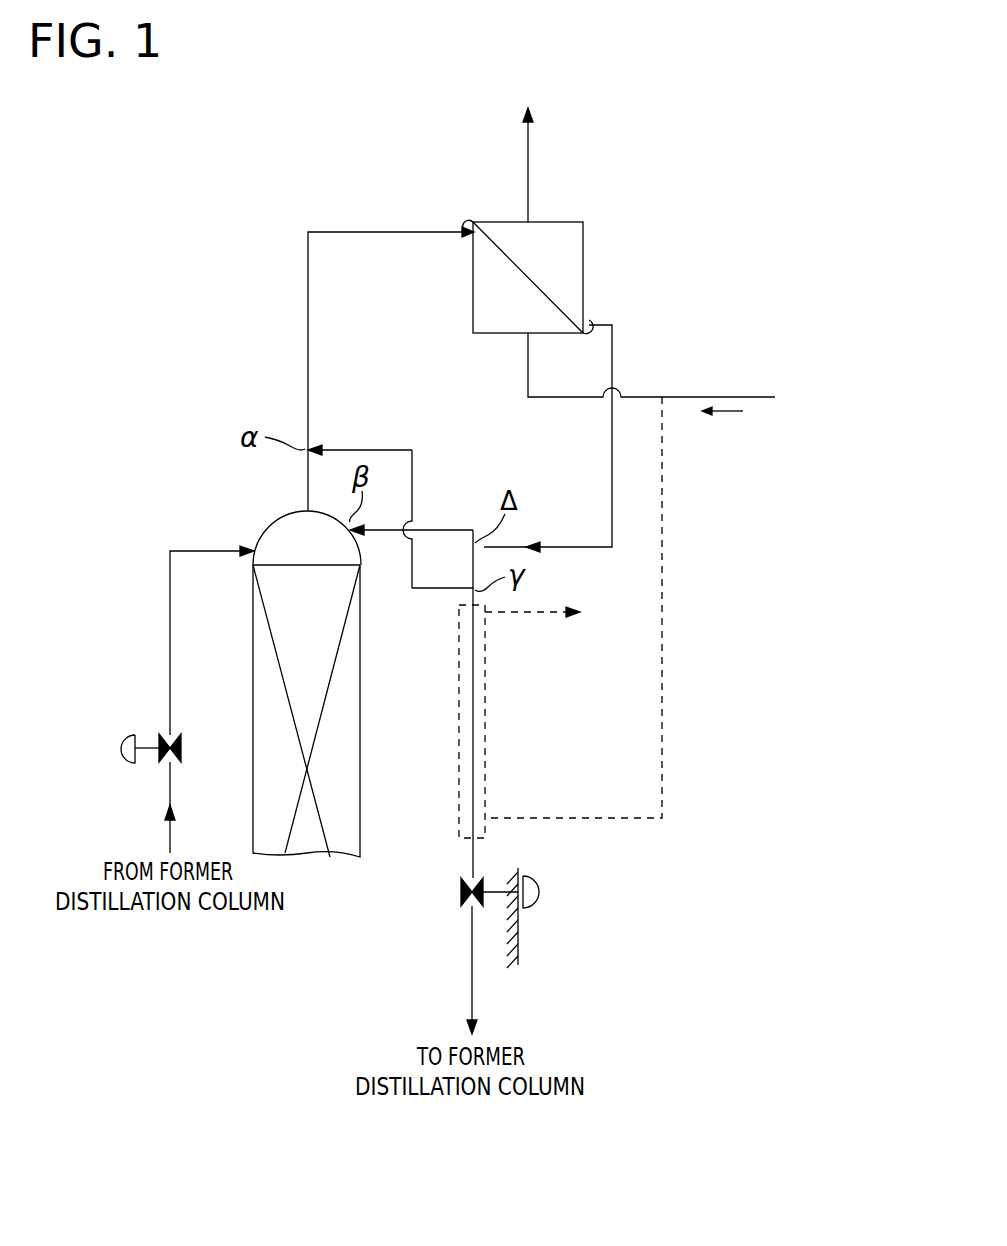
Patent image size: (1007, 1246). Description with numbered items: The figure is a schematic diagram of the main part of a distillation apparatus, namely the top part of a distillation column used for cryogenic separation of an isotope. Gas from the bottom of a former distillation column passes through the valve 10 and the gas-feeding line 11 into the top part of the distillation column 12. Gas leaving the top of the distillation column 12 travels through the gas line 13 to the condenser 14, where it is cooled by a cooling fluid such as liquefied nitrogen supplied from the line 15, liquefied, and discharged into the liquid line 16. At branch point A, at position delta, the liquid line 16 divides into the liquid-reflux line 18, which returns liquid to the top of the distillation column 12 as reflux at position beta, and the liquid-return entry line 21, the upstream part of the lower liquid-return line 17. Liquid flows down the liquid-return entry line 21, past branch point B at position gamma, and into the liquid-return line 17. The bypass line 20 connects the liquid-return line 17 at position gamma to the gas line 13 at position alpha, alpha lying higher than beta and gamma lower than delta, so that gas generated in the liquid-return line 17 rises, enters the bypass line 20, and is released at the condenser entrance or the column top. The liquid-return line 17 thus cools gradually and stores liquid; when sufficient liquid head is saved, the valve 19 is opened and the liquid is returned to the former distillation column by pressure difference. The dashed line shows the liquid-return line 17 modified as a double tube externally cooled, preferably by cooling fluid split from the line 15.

The valve 10 is at (158, 746).
The gas-feeding line 11 is at (168, 660).
The distillation column 12 is at (345, 712).
The gas line 13 is at (306, 320).
The condenser 14 is at (566, 247).
The line 15 is at (713, 397).
The liquid line 16 is at (610, 428).
The liquid-return line 17 is at (475, 646).
The liquid-reflux line 18 is at (447, 528).
The valve 19 is at (462, 890).
The bypass line 20 is at (367, 448).
The liquid-return entry line 21 is at (468, 567).